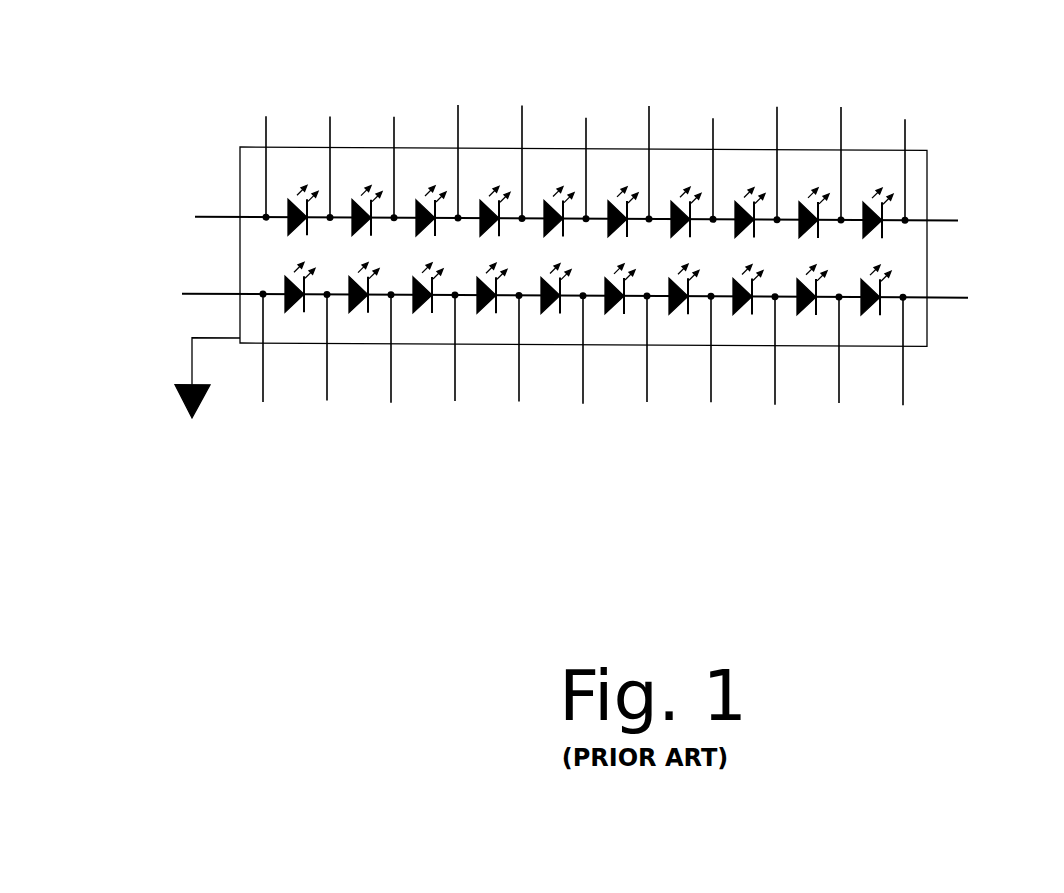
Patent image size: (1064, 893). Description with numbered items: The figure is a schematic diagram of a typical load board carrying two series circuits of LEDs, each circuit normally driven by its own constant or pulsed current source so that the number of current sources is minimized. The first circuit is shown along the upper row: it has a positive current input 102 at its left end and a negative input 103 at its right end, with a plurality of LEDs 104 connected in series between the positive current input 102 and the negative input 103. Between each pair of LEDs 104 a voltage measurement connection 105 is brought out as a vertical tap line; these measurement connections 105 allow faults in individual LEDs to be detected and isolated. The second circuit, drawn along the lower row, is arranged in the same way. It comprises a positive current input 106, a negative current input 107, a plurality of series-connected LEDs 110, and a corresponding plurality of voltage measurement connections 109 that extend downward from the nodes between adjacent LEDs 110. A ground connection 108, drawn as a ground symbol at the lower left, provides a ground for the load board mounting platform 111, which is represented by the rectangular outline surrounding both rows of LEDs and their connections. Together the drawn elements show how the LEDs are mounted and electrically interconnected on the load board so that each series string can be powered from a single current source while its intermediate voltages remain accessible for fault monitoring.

The positive current input 102 is at (212, 217).
The negative input 103 is at (958, 217).
The LEDs 104 is at (290, 203).
The voltage measurement connection 105 is at (458, 104).
The positive current input 106 is at (182, 294).
The negative current input 107 is at (968, 294).
The ground connection 108 is at (175, 385).
The voltage measurement connections 109 is at (263, 402).
The LEDs 110 is at (288, 311).
The load board mounting platform 111 is at (927, 147).